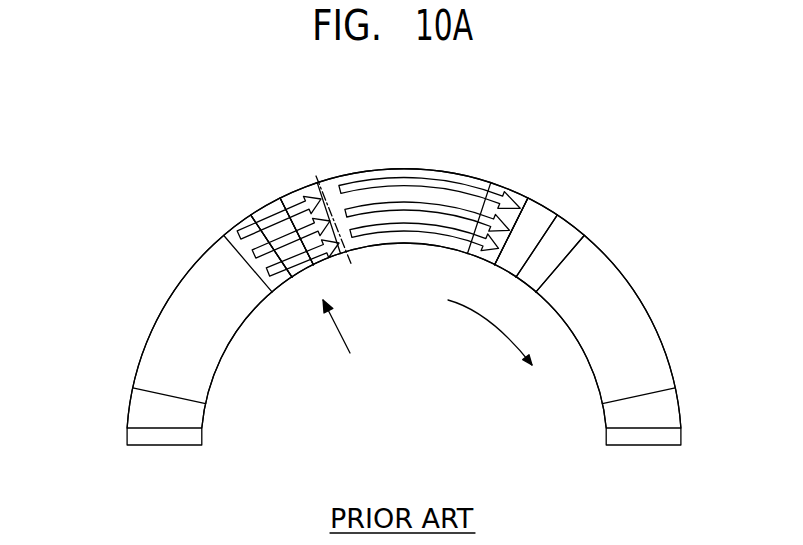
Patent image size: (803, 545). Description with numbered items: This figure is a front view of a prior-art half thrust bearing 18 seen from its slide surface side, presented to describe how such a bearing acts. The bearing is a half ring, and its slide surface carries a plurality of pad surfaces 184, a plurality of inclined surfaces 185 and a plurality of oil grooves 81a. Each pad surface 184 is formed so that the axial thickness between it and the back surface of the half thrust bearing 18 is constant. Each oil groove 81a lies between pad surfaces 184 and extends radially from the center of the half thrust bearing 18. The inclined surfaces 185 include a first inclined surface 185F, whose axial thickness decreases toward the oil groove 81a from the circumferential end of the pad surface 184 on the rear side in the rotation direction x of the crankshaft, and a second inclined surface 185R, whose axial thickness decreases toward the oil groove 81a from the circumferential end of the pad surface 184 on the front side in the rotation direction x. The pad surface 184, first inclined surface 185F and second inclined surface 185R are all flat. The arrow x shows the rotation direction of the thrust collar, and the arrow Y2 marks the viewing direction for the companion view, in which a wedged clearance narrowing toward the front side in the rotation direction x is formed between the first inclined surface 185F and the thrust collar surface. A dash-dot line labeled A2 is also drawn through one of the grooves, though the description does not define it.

The half thrust bearing 18 is at (607, 117).
The pad surface 184 is at (418, 168).
The inclined surface 185 is at (236, 249).
The first inclined surface 185F is at (294, 192).
The second inclined surface 185R is at (250, 219).
The oil groove 81a is at (270, 208).
The axis A2 is at (314, 170).
The arrow Y2 is at (349, 342).
The rotation direction X x is at (490, 332).